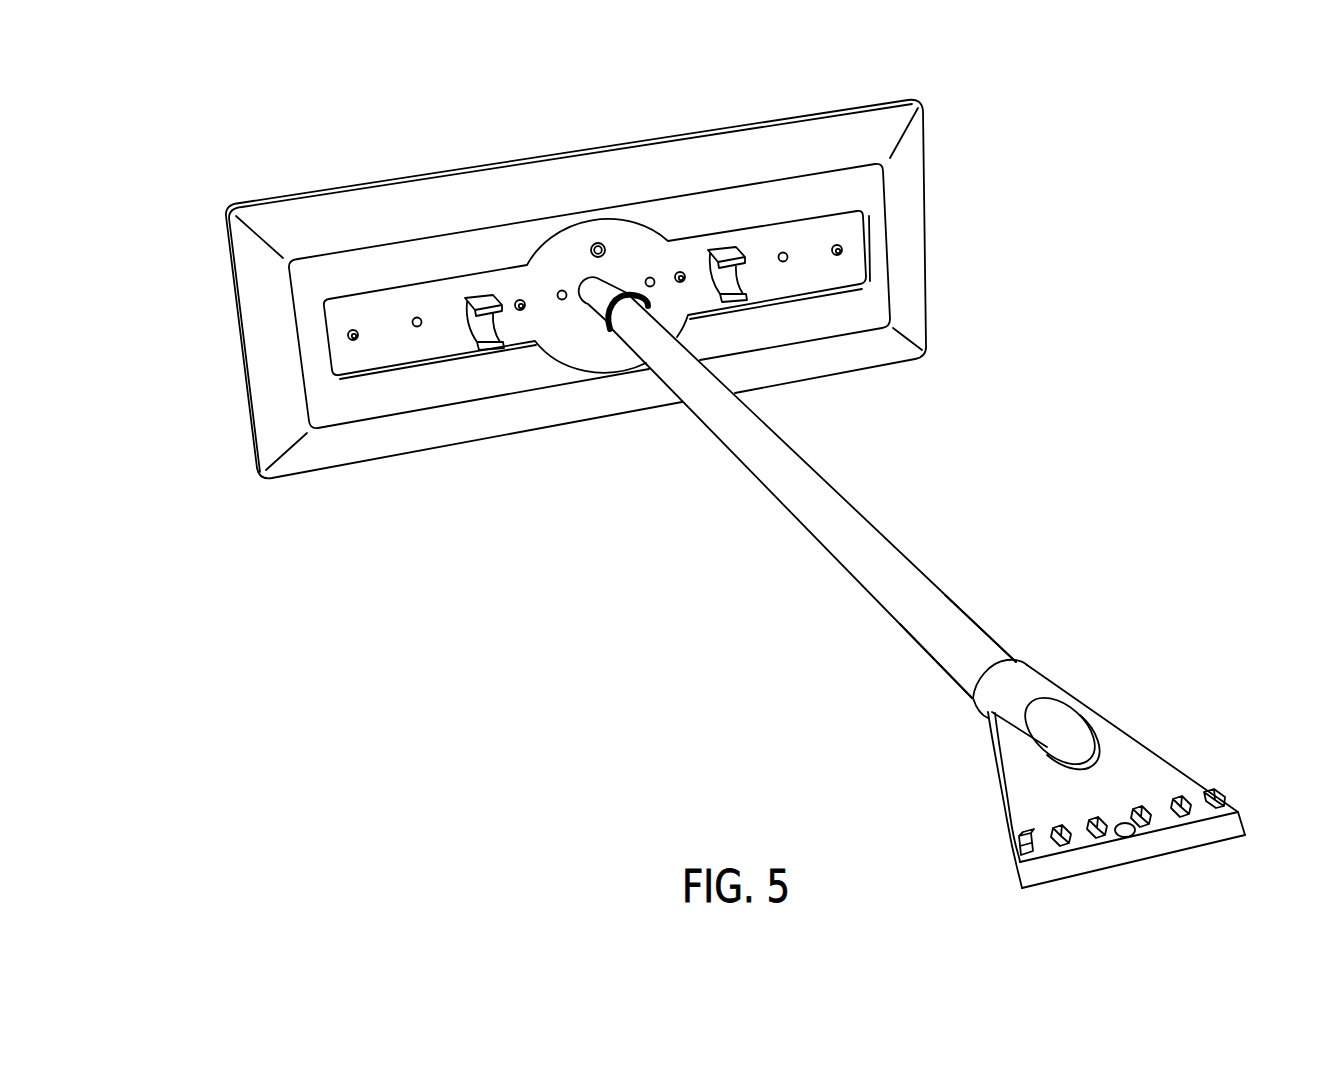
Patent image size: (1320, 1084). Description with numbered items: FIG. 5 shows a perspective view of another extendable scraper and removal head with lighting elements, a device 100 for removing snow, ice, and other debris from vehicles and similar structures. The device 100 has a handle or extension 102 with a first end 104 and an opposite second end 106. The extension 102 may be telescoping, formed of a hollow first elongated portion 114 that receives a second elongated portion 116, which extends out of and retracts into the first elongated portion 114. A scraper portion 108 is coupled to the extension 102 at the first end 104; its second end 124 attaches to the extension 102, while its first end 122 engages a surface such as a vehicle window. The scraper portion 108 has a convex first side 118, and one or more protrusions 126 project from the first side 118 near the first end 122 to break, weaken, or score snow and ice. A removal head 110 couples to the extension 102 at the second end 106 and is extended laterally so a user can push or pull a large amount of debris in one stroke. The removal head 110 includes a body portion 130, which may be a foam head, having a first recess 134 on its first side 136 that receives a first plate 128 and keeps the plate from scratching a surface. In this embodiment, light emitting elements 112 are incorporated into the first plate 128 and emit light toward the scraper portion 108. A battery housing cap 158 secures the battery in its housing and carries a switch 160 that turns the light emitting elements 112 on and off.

The device 100 is at (358, 111).
The extension 102 is at (893, 515).
The first end 104 is at (967, 675).
The second end 106 is at (616, 288).
The scraper portion 108 is at (1174, 758).
The removal head 110 is at (209, 199).
The light emitting elements 112 is at (416, 318).
The first elongated portion 114 is at (740, 457).
The second elongated portion 116 is at (597, 298).
The first side 118 is at (1023, 782).
The first end 122 is at (1117, 871).
The second end 124 is at (1028, 665).
The protrusions 126 is at (1018, 852).
The first plate 128 is at (814, 233).
The body portion 130 is at (930, 224).
The first recess 134 is at (407, 363).
The first side 136 is at (882, 305).
The battery housing cap 158 is at (594, 245).
The switch 160 is at (603, 243).